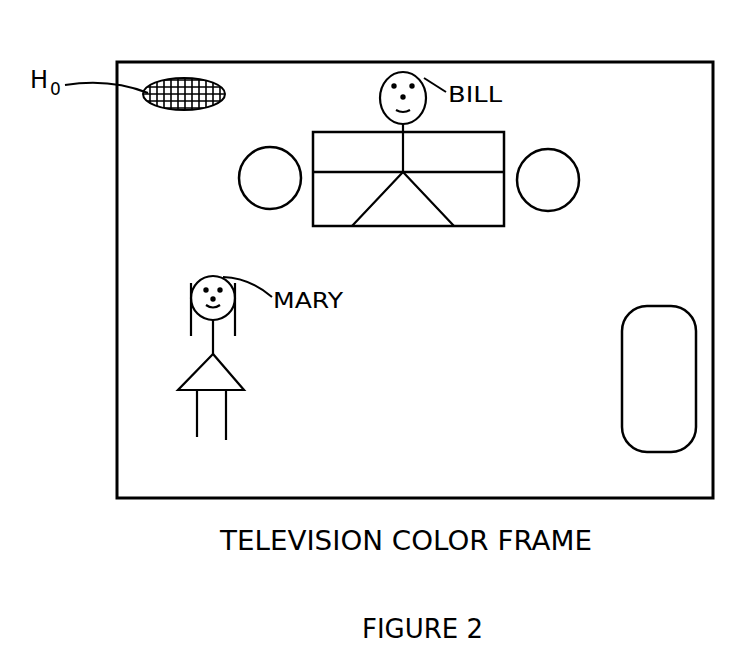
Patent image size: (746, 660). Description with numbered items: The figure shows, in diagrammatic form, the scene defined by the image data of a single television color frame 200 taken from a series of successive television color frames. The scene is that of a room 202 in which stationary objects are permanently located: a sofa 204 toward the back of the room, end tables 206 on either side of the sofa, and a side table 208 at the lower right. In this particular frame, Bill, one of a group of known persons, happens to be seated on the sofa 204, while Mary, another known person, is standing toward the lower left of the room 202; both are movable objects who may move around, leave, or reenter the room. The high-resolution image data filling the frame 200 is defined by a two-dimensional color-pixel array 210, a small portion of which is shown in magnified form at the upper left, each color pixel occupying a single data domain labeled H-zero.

The television color frame 200 is at (116, 290).
The room 202 is at (141, 217).
The sofa 204 is at (467, 224).
The end tables 206 is at (241, 188).
The side table 208 is at (620, 349).
The two-dimensional color-pixel array 210 is at (185, 80).